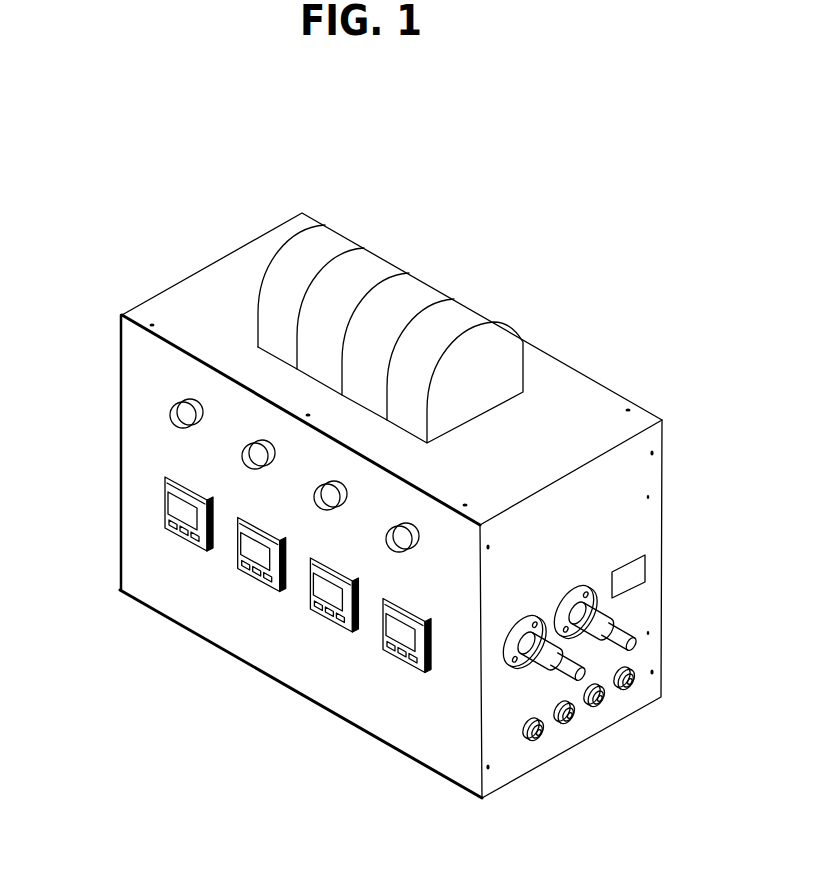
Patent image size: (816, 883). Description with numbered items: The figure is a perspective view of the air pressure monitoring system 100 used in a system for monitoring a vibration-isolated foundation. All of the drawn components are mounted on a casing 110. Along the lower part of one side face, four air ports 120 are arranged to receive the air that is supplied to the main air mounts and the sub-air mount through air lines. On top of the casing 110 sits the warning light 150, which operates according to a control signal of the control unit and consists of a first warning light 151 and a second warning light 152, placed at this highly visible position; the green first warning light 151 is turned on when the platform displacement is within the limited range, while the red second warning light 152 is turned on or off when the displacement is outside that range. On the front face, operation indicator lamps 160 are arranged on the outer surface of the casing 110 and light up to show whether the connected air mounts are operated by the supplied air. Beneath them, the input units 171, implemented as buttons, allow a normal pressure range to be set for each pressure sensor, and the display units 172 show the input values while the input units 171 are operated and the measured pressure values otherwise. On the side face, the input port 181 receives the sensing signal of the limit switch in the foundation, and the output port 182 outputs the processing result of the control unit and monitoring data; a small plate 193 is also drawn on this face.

The air pressure monitoring system 100 is at (505, 118).
The casing 110 is at (560, 360).
The air ports 120 is at (630, 685).
The warning light 150 is at (510, 296).
The first warning light 151 is at (383, 262).
The second warning light 152 is at (430, 287).
The operation indicator lamps 160 is at (170, 412).
The input units 171 is at (172, 522).
The display units 172 is at (173, 502).
The input port 181 is at (542, 645).
The output port 182 is at (607, 610).
The power switch plate 193 is at (640, 566).